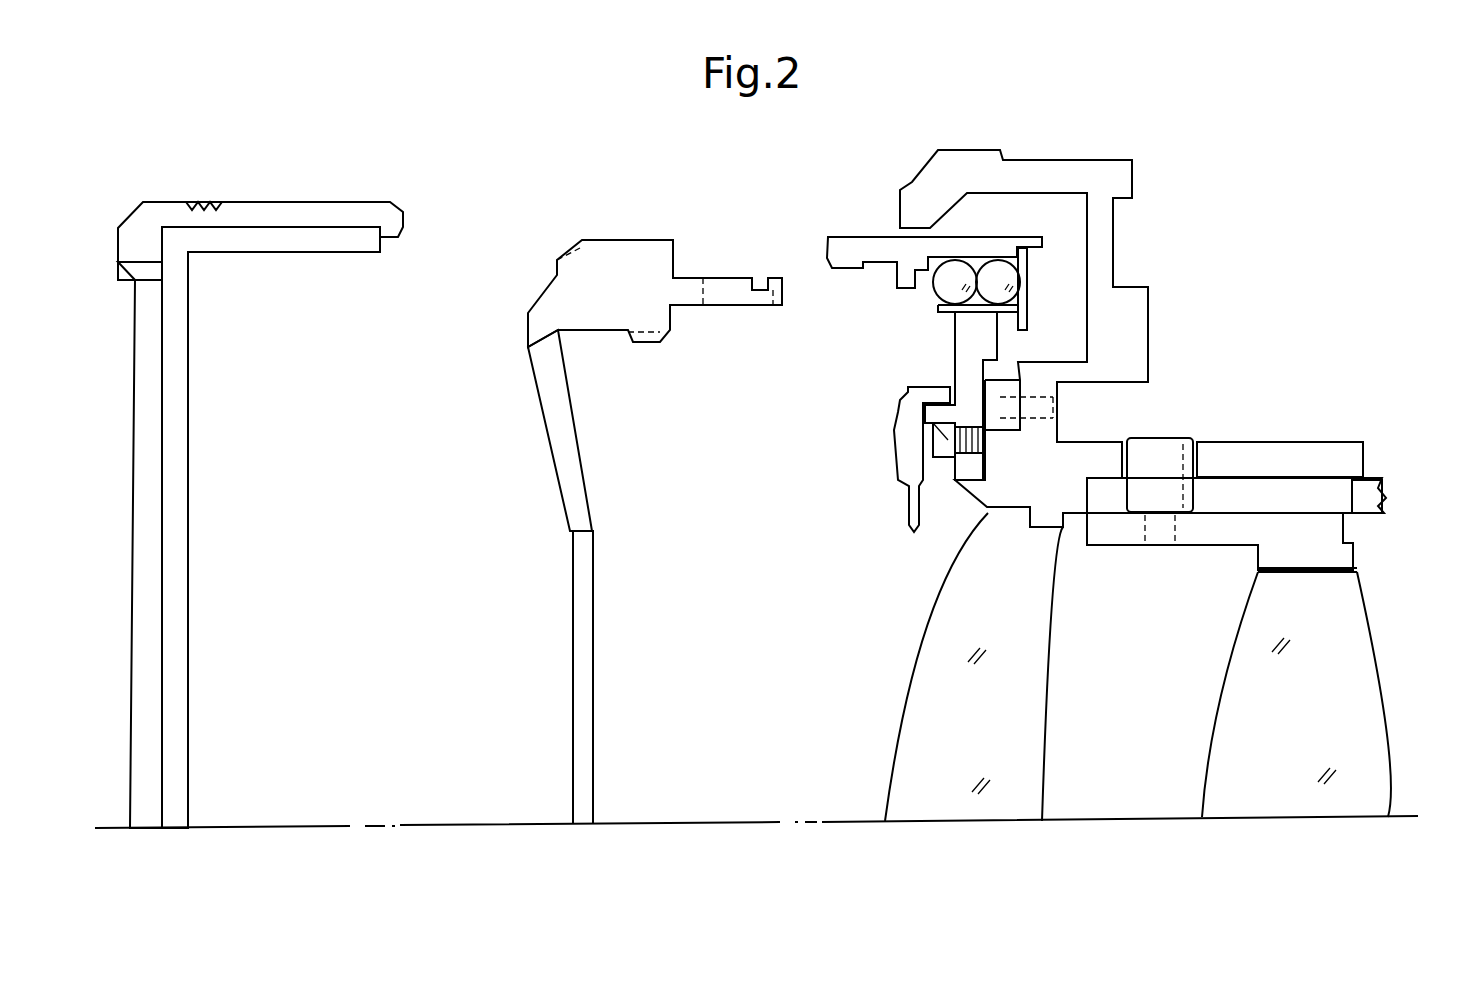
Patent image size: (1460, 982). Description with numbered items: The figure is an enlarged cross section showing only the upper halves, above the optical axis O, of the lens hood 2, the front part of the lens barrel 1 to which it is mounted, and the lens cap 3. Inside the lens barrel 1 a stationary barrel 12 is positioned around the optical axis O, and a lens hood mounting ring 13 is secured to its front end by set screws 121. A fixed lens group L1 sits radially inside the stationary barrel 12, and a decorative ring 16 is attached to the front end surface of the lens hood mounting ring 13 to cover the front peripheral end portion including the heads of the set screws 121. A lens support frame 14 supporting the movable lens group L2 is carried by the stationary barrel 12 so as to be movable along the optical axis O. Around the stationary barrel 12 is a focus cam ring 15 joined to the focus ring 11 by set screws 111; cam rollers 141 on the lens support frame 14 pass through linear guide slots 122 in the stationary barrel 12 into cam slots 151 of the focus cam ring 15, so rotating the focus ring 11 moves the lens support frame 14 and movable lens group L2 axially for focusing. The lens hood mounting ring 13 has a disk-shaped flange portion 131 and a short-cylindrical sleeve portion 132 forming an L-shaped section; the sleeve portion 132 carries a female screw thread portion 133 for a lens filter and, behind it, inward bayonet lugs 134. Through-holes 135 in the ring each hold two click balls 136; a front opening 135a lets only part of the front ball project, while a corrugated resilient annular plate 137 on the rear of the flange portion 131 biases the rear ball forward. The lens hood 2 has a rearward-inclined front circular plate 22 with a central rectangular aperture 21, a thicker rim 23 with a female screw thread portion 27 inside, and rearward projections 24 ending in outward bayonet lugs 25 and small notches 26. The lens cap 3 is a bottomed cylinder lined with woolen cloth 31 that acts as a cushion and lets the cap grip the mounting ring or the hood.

The lens barrel 1 is at (1256, 212).
The lens hood 2 is at (644, 495).
The lens cap 3 is at (260, 483).
The focus ring 11 is at (1024, 309).
The stationary barrel 12 is at (1182, 490).
The lens hood mounting ring 13 is at (943, 309).
The lens support frame 14 is at (1133, 546).
The focus cam ring 15 is at (1290, 424).
The decorative ring 16 is at (900, 470).
The rectangular aperture 21 is at (576, 700).
The front circular plate 22 is at (560, 488).
The rim 23 is at (605, 312).
The rearward projections 24 is at (717, 308).
The outward bayonet lugs 25 is at (776, 278).
The small notches 26 is at (780, 308).
The female screw thread portion 27 is at (652, 345).
The woolen cloth 31 is at (180, 494).
The set screws 111 is at (1050, 412).
The set screws 121 is at (950, 460).
The linear guide slots 122 is at (1352, 512).
The flange portion 131 is at (956, 350).
The sleeve portion 132 is at (882, 247).
The female screw thread portion 133 is at (844, 268).
The inward bayonet lugs 134 is at (902, 286).
The through-holes 135 is at (1000, 312).
The front opening 135a is at (940, 306).
The click balls 136 is at (998, 268).
The corrugated resilient annular plate 137 is at (1028, 286).
The cam rollers 141 is at (1155, 462).
The cam slots 151 is at (1200, 440).
The fixed lens group L1 is at (962, 800).
The movable lens group L2 is at (1282, 800).
The optical axis O is at (728, 832).